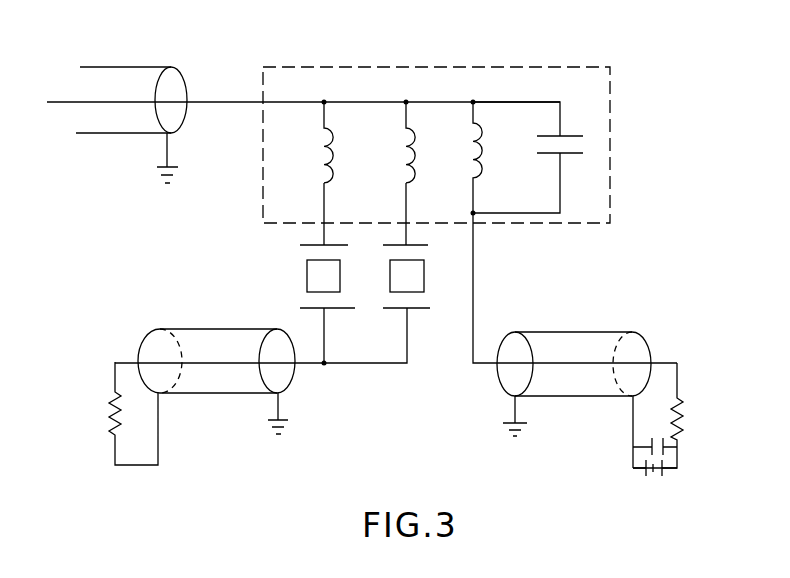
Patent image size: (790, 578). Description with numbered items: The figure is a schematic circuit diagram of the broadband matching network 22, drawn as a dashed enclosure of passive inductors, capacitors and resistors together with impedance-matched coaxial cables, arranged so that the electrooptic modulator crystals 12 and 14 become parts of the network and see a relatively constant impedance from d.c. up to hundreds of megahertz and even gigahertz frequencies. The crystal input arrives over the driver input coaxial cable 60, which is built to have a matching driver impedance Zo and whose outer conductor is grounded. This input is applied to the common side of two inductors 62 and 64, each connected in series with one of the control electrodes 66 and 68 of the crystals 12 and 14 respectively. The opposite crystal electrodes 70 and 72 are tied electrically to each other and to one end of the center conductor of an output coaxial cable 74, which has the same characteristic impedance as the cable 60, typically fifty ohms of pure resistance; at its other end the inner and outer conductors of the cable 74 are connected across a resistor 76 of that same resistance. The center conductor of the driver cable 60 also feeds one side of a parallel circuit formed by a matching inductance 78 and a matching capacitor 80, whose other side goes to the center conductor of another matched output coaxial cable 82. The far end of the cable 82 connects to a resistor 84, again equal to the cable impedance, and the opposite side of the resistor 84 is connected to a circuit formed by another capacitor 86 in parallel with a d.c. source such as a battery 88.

The electrooptic modulator crystal 12 is at (323, 276).
The electrooptic modulator crystal 14 is at (407, 276).
The broadband matching network 22 is at (383, 66).
The driver input coaxial cable 60 is at (126, 133).
The inductor 62 is at (335, 150).
The inductor 64 is at (418, 168).
The control electrode 66 is at (300, 246).
The control electrode 68 is at (428, 247).
The crystal electrode 70 is at (300, 308).
The crystal electrode 72 is at (420, 310).
The output coaxial cable 74 is at (213, 393).
The resistor 76 is at (118, 400).
The matching inductance 78 is at (483, 145).
The matching capacitor 80 is at (548, 156).
The output coaxial cable 82 is at (545, 332).
The resistor 84 is at (683, 417).
The capacitor 86 is at (648, 440).
The battery 88 is at (645, 480).